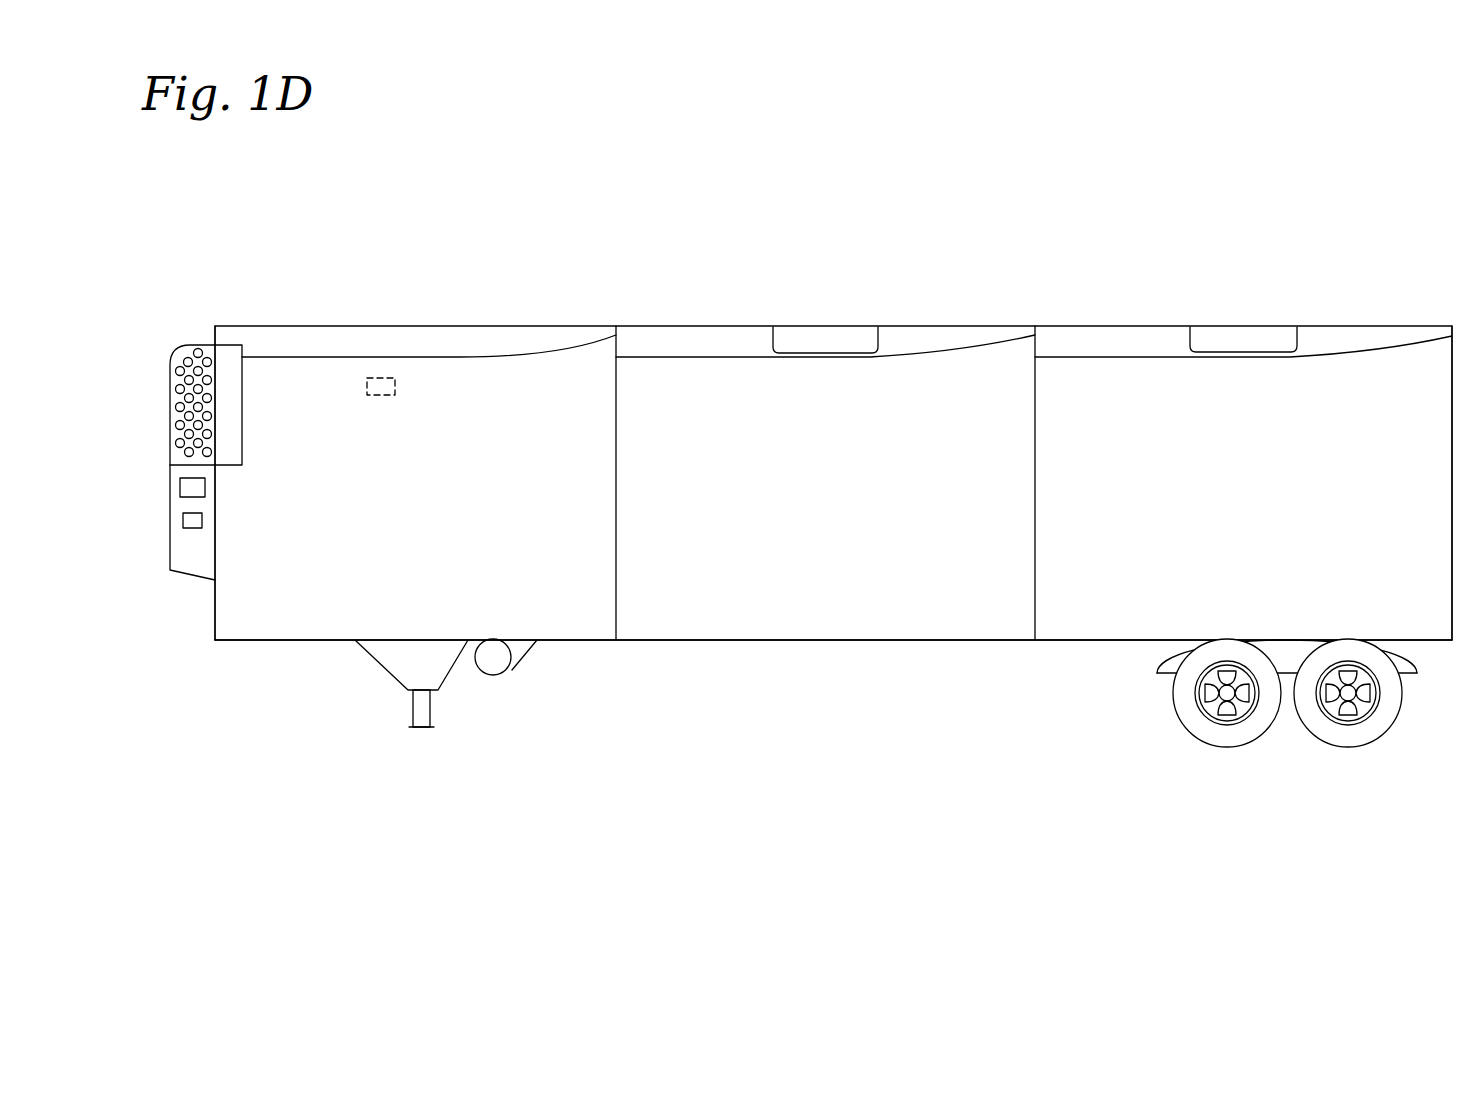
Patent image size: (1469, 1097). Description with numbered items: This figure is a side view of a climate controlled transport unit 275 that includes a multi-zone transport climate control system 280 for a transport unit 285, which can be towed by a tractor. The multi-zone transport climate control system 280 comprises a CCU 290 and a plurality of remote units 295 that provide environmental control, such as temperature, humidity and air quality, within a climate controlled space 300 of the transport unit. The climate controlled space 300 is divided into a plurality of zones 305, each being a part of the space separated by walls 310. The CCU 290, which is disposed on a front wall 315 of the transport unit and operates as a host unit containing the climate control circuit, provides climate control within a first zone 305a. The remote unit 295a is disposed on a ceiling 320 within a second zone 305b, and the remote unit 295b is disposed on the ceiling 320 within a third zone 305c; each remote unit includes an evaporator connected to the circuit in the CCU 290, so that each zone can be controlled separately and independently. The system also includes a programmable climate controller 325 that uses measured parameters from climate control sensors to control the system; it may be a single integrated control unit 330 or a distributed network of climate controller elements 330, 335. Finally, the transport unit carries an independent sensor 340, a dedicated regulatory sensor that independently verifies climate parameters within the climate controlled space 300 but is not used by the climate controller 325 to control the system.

The climate controlled transport unit 275 is at (557, 192).
The multi-zone transport climate control system 280 is at (167, 308).
The transport unit 285 is at (1395, 325).
The CCU 290 is at (192, 577).
The remote units 295 is at (857, 290).
The remote unit 295a is at (820, 335).
The remote unit 295b is at (1222, 335).
The climate controlled space 300 is at (330, 613).
The zones 305 is at (357, 768).
The first zone 305a is at (398, 620).
The second zone 305b is at (872, 620).
The third zone 305c is at (1146, 622).
The walls 310 is at (615, 393).
The front wall 315 is at (214, 640).
The ceiling 320 is at (738, 332).
The climate controller 325 is at (158, 476).
The integrated control unit 330 is at (185, 497).
The climate controller element 335 is at (187, 528).
The independent sensor 340 is at (382, 375).